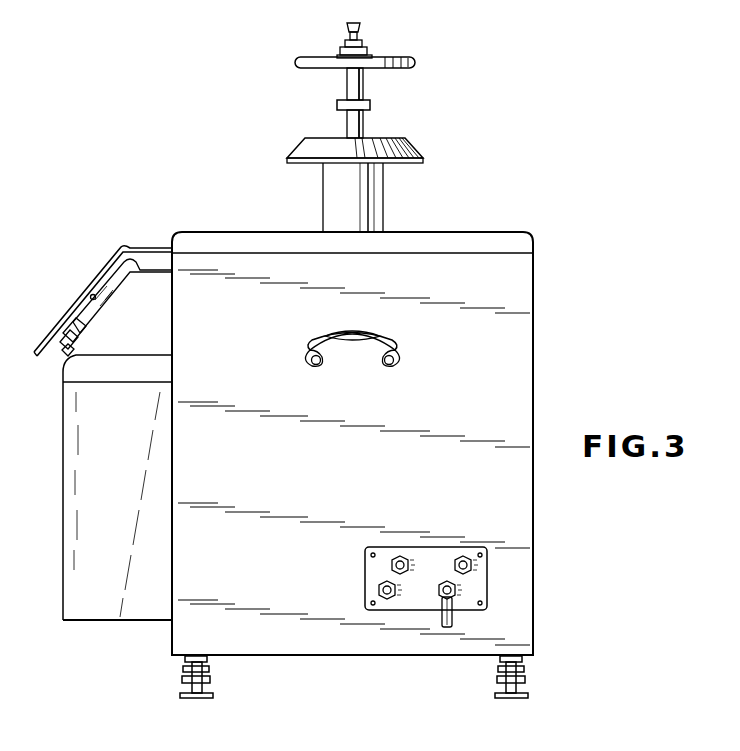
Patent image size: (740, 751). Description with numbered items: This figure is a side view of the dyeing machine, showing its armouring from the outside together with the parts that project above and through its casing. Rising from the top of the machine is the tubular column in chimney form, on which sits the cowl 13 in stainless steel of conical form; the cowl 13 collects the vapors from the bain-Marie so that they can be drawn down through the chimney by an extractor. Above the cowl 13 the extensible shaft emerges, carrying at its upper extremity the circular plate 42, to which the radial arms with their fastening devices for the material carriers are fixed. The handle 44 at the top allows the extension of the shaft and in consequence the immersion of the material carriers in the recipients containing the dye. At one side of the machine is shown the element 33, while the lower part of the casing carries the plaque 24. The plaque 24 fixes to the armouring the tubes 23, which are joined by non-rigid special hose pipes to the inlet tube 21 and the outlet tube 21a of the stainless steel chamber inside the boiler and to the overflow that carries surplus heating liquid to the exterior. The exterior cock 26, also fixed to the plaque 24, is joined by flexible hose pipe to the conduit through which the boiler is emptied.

The cowl 13 is at (415, 150).
The circular plate 42 is at (415, 62).
The handle 44 is at (360, 30).
The arm 33 is at (93, 278).
The inlet tube 21 is at (463, 556).
The outlet tube 21a is at (398, 556).
The tubes 23 is at (378, 590).
The plaque 24 is at (475, 587).
The exterior cock 26 is at (440, 595).